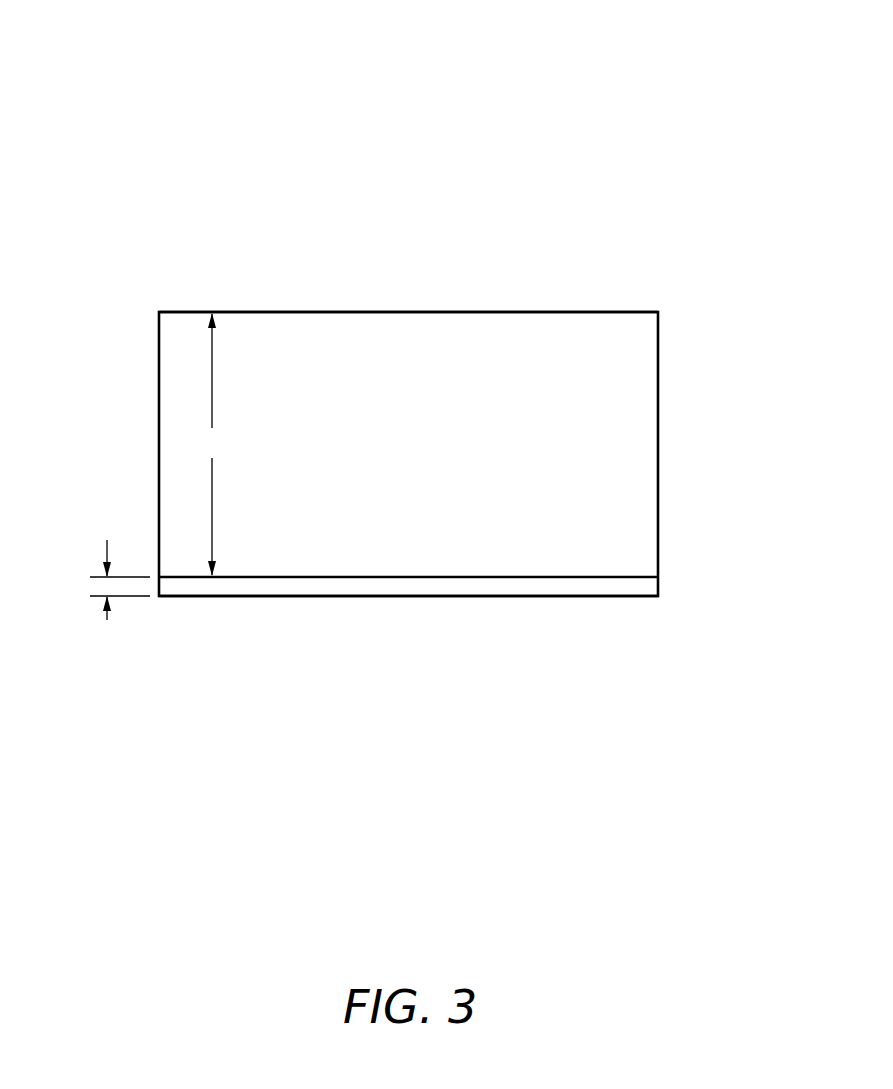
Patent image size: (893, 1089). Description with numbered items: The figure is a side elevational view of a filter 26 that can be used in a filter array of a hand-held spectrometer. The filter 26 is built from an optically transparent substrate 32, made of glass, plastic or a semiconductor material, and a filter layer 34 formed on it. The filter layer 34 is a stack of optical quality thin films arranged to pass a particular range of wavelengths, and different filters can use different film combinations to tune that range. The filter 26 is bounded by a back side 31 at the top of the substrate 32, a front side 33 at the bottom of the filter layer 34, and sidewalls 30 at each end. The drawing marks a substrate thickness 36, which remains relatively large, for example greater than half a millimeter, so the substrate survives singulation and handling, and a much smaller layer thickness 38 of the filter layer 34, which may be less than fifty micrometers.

The filter 26 is at (155, 146).
The sidewalls 30 is at (660, 454).
The back side 31 is at (408, 312).
The optically transparent substrate 32 is at (535, 328).
The front side 33 is at (598, 597).
The filter layer 34 is at (420, 587).
The substrate thickness 36 is at (211, 444).
The layer thickness 38 is at (101, 580).